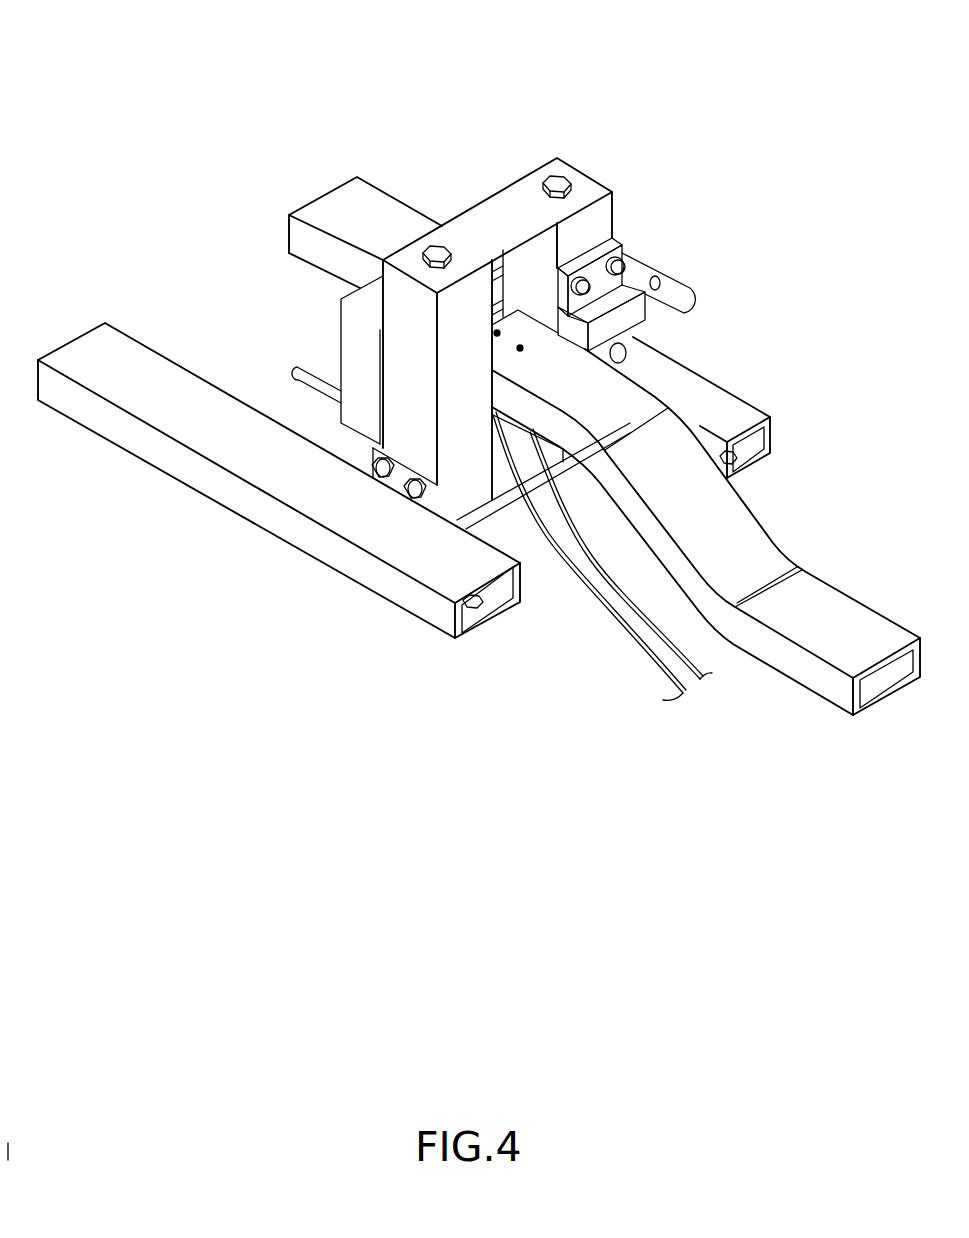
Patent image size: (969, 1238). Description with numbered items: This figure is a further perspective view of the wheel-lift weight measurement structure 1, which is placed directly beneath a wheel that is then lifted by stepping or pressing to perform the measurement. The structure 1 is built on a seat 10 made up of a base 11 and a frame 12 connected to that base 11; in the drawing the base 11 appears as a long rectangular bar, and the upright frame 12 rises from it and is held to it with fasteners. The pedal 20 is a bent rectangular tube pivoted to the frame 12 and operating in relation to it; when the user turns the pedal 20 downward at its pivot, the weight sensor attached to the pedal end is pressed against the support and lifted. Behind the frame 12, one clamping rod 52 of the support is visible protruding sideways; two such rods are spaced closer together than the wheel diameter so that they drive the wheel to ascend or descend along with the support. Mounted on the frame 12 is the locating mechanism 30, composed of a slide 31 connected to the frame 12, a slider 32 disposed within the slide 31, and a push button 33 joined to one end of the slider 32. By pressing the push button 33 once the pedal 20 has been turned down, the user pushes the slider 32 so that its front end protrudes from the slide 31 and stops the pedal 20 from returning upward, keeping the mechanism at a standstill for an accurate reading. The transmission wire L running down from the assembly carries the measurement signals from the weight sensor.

The wheel-lift weight measurement structure 1 is at (479, 359).
The seat 10 is at (279, 489).
The base 11 is at (290, 530).
The frame 12 is at (440, 455).
The pedal 20 is at (835, 600).
The locating mechanism 30 is at (721, 296).
The slide 31 is at (660, 276).
The slider 32 is at (645, 332).
The push button 33 is at (693, 297).
The clamping rod 52 is at (300, 368).
The transmission wire L is at (640, 660).